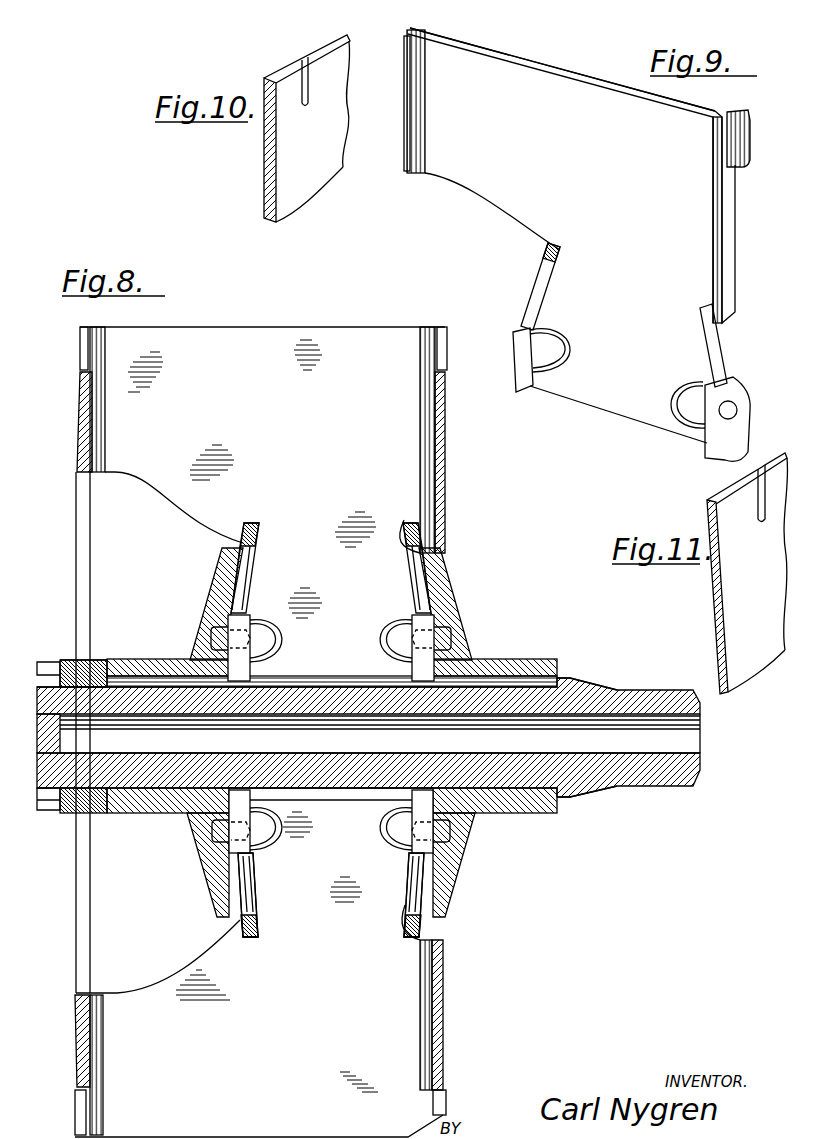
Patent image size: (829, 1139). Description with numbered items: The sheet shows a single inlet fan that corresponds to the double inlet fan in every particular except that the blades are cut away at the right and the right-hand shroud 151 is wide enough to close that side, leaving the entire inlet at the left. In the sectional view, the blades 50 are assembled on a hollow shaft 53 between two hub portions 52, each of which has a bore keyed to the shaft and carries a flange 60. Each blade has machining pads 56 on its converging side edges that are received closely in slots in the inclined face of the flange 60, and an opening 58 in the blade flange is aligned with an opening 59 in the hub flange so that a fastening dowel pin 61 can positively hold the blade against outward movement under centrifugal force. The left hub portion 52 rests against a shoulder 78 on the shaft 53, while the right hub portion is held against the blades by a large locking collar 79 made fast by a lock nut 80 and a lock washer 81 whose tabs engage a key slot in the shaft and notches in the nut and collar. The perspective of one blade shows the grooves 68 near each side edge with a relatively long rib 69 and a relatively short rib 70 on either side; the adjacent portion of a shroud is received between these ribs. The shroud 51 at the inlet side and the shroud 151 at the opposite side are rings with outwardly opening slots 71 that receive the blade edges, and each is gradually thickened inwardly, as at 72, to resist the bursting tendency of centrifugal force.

In FIG. 8, the blade 50 is at (222, 380).
In FIG. 9, the blade 50 is at (527, 118).
In FIG. 8, the circular shroud 51 is at (80, 410).
In FIG. 10, the circular shroud 51 is at (315, 154).
In FIG. 8, the shroud 151 is at (446, 431).
In FIG. 11, the shroud 151 is at (733, 612).
In FIG. 8, the hub portion 52 is at (126, 659).
In FIG. 8, the hollow shaft 53 is at (660, 770).
In FIG. 8, the machining pad 56 is at (240, 900).
In FIG. 8, the opening 58 is at (252, 856).
In FIG. 8, the opening 59 is at (222, 858).
In FIG. 8, the flange 60 is at (222, 557).
In FIG. 8, the dowel pin 61 is at (214, 836).
In FIG. 9, the groove 68 is at (404, 48).
In FIG. 9, the rib 69 is at (422, 27).
In FIG. 9, the rib 70 is at (406, 34).
In FIG. 10, the slot 71 is at (301, 58).
In FIG. 10, the thickened portion 72 is at (264, 186).
In FIG. 8, the shoulder 78 is at (566, 684).
In FIG. 8, the locking collar 79 is at (98, 812).
In FIG. 8, the lock nut 80 is at (48, 808).
In FIG. 8, the lock washer 81 is at (58, 660).